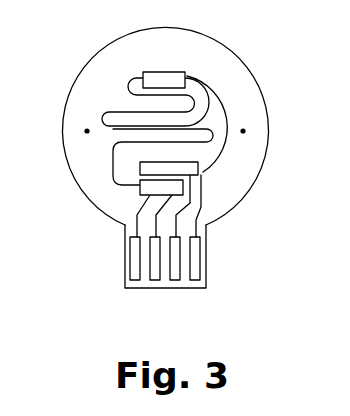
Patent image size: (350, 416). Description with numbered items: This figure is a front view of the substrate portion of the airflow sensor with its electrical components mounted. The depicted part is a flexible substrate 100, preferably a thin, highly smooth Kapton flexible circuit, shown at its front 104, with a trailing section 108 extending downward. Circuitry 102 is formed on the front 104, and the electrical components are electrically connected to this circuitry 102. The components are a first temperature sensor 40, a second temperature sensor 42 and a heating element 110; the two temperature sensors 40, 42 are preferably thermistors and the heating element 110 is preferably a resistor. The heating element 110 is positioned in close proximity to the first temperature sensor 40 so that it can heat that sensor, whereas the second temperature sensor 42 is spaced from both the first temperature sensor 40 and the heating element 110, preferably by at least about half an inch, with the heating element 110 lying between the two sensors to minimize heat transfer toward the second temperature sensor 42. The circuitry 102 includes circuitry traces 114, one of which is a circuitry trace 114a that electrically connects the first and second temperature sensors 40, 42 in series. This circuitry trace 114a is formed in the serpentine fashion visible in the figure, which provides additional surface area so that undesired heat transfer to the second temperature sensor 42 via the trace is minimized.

The flexible substrate 100 is at (183, 50).
The second temperature sensor 42 is at (167, 82).
The circuitry 102 is at (231, 108).
The front 104 is at (268, 147).
The circuitry traces 114 is at (144, 170).
The circuitry trace 114a is at (111, 130).
The heating element 110 is at (198, 168).
The first temperature sensor 40 is at (140, 188).
The trailing section 108 is at (165, 288).